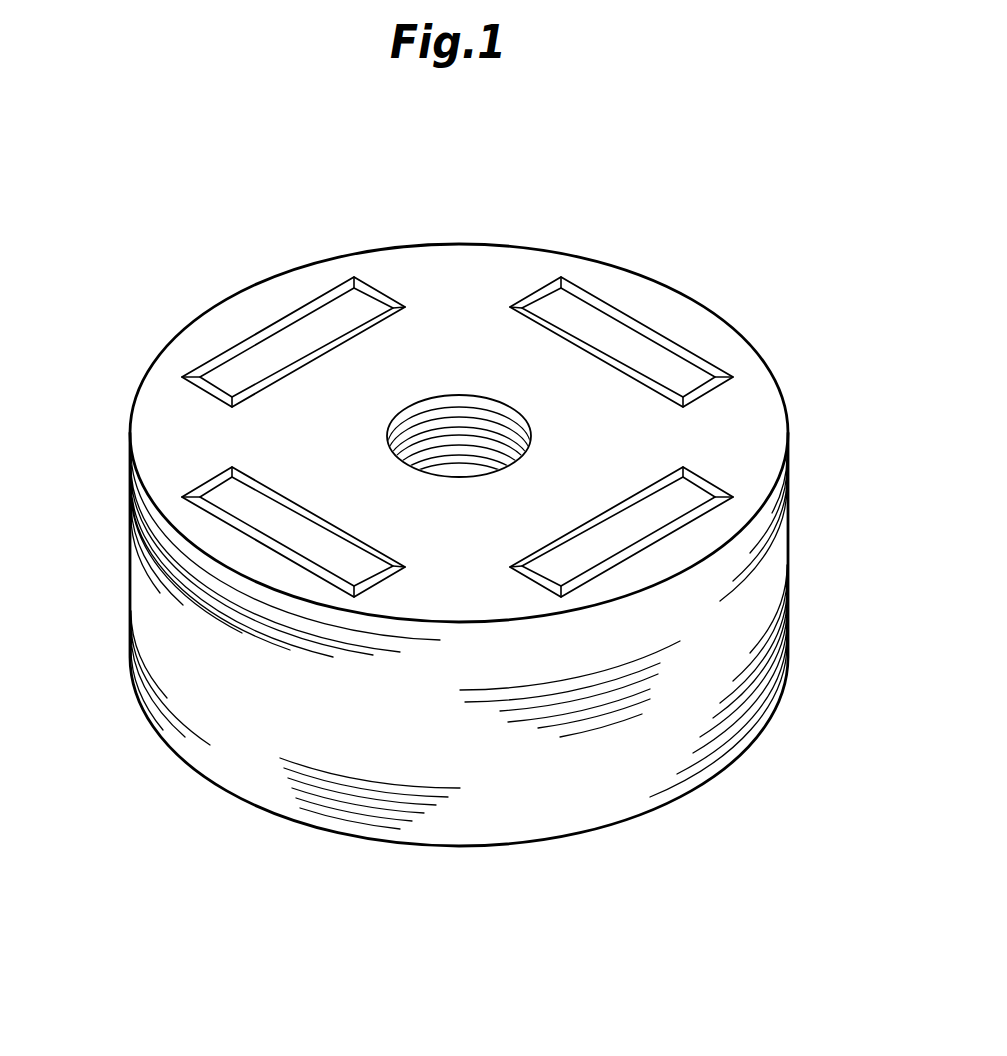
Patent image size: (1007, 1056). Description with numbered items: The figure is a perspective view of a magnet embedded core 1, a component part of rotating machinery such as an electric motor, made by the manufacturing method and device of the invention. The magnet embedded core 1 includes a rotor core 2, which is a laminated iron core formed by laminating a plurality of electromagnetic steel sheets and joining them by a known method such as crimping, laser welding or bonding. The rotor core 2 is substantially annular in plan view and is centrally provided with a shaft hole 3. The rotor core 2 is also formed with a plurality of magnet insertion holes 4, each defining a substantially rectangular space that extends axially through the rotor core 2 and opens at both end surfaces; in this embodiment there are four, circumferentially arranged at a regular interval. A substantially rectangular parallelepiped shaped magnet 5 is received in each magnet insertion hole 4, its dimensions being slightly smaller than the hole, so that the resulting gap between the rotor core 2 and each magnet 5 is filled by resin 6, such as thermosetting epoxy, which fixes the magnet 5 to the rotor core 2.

The magnet embedded core 1 is at (708, 193).
The rotor core 2 is at (727, 323).
The shaft hole 3 is at (493, 433).
The magnet insertion hole 4 is at (268, 330).
The magnet 5 is at (237, 502).
The resin 6 is at (338, 293).